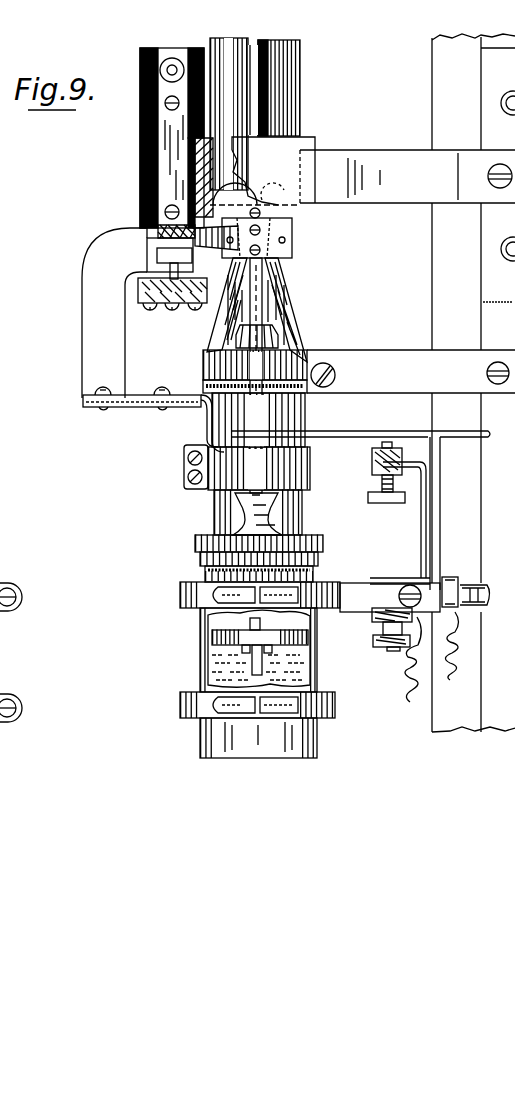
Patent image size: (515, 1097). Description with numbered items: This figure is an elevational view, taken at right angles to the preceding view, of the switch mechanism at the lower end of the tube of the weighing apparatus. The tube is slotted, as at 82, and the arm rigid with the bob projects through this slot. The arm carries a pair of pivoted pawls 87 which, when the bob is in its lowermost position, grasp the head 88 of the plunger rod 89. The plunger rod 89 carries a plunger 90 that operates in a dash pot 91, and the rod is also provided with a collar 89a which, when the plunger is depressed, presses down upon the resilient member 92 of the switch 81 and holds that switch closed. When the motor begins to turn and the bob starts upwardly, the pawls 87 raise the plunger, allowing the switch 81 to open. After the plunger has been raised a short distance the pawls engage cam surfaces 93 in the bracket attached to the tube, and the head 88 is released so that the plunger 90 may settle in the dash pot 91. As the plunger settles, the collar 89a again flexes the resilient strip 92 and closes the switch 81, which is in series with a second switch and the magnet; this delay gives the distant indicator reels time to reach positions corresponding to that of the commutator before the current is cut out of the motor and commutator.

The slot 82 is at (258, 76).
The cam surfaces 93 is at (302, 134).
The pivoted pawls 87 is at (282, 270).
The head 88 is at (278, 340).
The plunger rod 89 is at (266, 418).
The collar 89a is at (205, 400).
The resilient member 92 is at (404, 431).
The switch 81 is at (376, 446).
The plunger 90 is at (210, 638).
The dash pot 91 is at (203, 745).